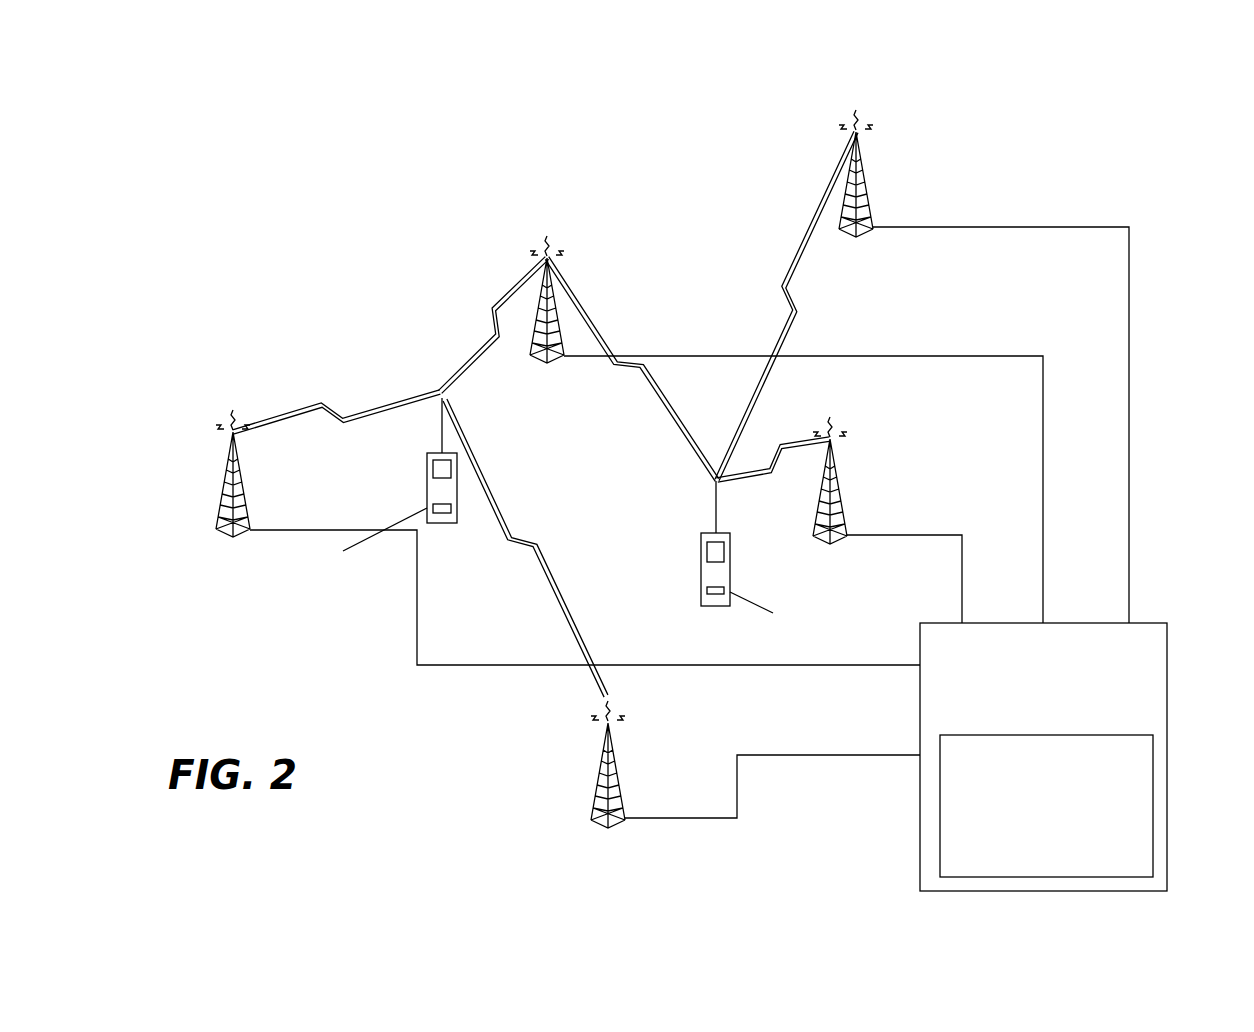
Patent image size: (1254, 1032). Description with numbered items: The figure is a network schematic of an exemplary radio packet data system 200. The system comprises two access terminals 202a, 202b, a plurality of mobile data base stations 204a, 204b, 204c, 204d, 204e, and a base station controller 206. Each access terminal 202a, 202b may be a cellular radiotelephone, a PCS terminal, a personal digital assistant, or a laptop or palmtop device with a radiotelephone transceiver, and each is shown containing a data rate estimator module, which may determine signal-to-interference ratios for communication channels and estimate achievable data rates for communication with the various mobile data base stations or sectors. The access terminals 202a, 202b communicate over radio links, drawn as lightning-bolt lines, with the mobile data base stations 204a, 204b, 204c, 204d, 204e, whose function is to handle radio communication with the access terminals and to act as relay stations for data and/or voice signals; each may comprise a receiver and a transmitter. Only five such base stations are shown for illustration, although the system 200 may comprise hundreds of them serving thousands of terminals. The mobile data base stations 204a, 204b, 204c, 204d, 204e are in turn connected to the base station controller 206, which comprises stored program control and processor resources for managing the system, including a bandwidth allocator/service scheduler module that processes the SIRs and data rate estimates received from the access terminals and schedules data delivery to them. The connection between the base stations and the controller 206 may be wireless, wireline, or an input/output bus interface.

The radio packet data system 200 is at (1131, 147).
The access terminal 202a is at (730, 576).
The access terminal 202b is at (427, 487).
The mobile data base station 204a is at (857, 490).
The mobile data base station 204b is at (578, 777).
The mobile data base station 204c is at (203, 493).
The mobile data base station 204d is at (541, 246).
The mobile data base station 204e is at (887, 127).
The base station controller 206 is at (1043, 757).